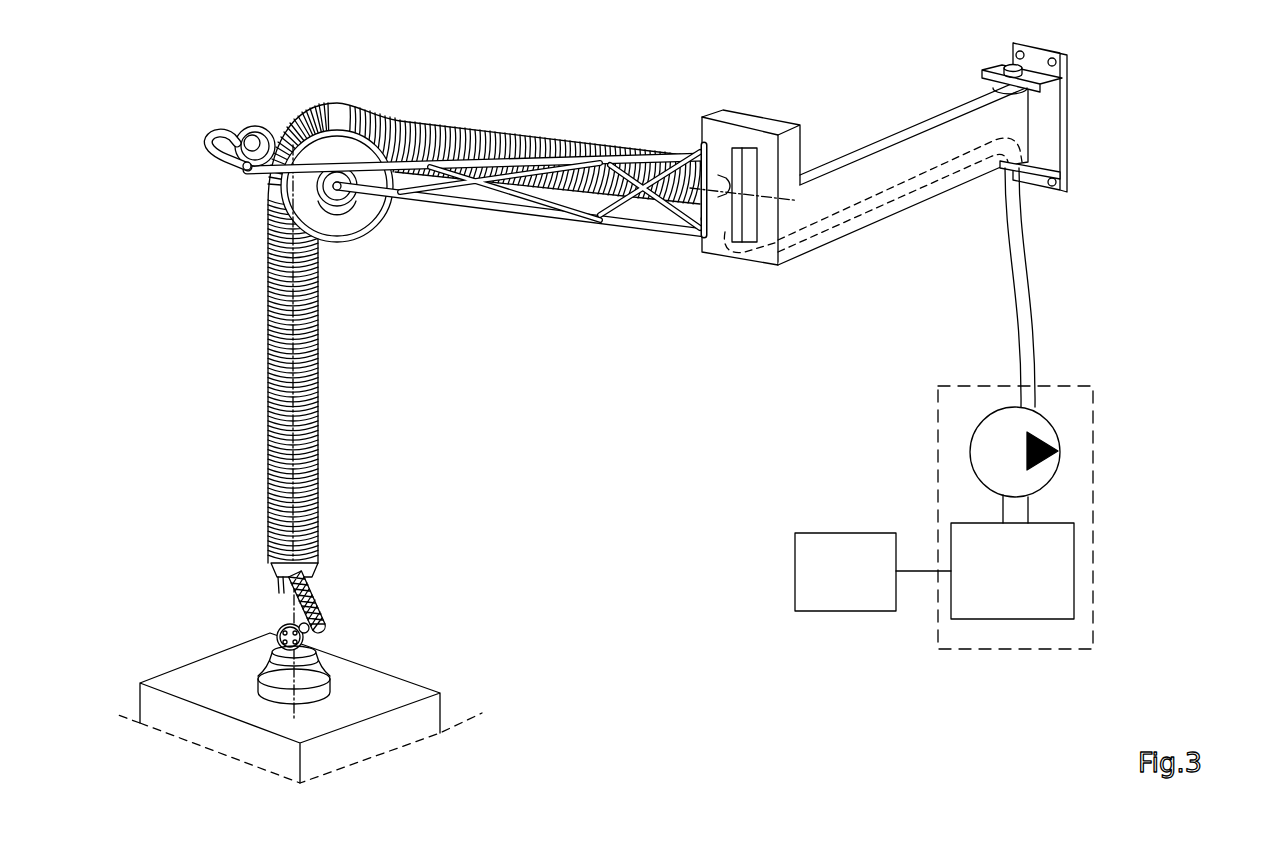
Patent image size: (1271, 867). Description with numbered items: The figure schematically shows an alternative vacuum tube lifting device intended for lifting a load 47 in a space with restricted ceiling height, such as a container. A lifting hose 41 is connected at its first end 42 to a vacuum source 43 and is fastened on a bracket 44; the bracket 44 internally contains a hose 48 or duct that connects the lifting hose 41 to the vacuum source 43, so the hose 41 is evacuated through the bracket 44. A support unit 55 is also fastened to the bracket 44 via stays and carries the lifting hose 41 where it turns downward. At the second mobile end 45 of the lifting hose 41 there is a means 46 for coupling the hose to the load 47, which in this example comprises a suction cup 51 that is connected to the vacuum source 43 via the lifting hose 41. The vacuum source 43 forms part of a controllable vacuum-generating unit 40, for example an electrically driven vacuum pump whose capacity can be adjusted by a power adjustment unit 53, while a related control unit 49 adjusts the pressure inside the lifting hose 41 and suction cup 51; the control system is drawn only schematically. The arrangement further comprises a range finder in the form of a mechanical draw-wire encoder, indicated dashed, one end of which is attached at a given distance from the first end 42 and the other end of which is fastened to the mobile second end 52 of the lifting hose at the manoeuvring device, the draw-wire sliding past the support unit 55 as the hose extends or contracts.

The controllable vacuum-generating unit 40 is at (983, 565).
The lifting hose 41 is at (438, 120).
The first end 42 is at (712, 264).
The vacuum source 43 is at (968, 448).
The bracket 44 is at (890, 148).
The second mobile end 45 is at (320, 561).
The means for coupling 46 is at (318, 600).
The load 47 is at (392, 688).
The hose 48 is at (892, 200).
The control unit 49 is at (808, 549).
The suction cup 51 is at (318, 665).
The mobile second end 52 is at (268, 558).
The power adjustment unit 53 is at (955, 533).
The support unit 55 is at (363, 236).